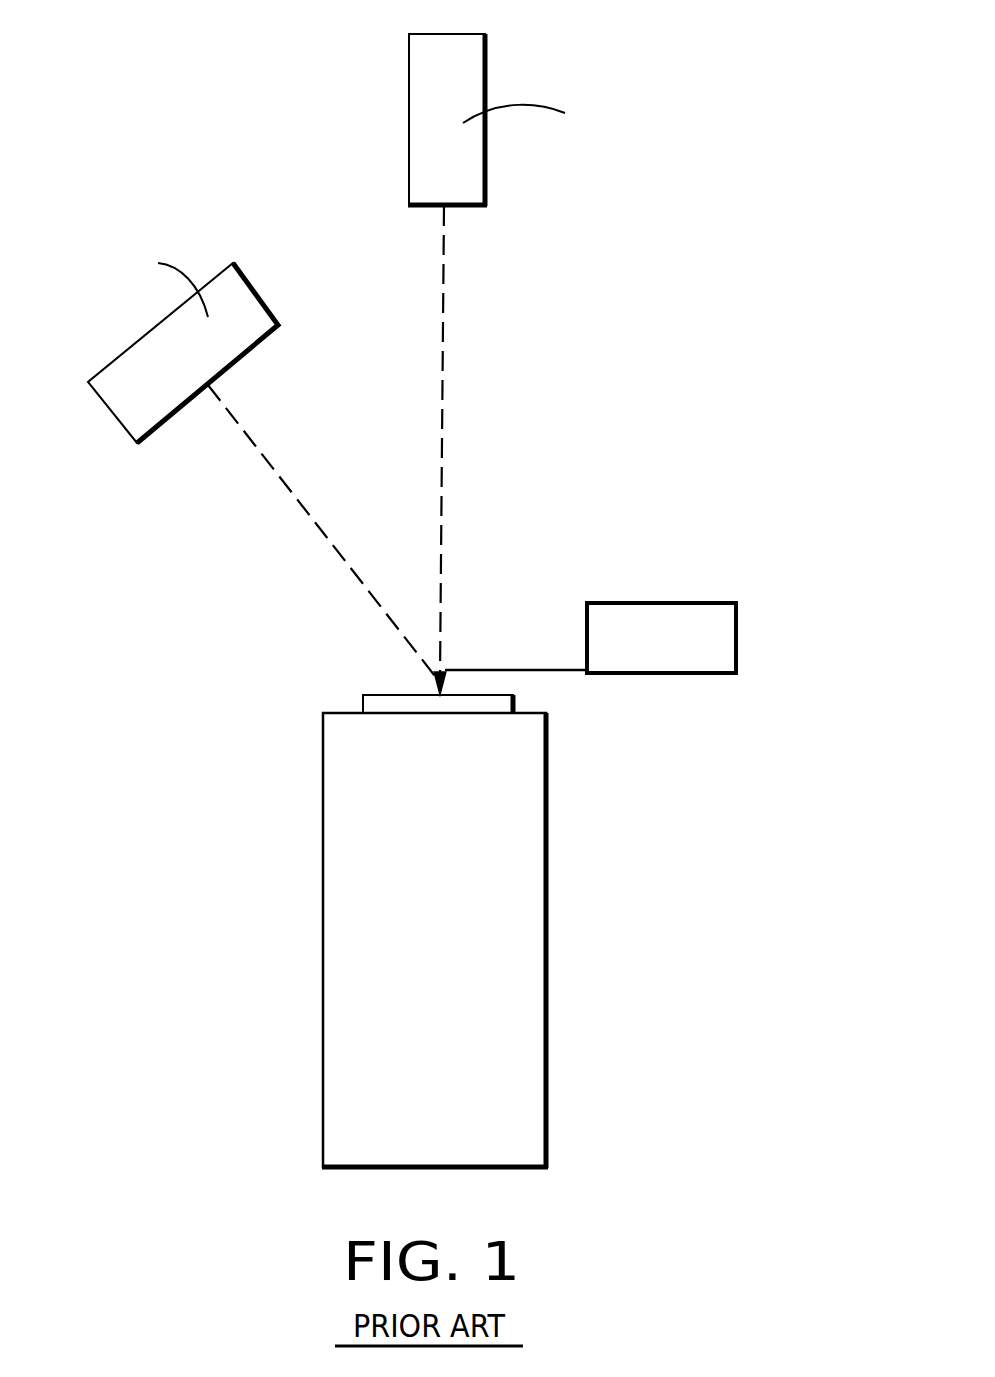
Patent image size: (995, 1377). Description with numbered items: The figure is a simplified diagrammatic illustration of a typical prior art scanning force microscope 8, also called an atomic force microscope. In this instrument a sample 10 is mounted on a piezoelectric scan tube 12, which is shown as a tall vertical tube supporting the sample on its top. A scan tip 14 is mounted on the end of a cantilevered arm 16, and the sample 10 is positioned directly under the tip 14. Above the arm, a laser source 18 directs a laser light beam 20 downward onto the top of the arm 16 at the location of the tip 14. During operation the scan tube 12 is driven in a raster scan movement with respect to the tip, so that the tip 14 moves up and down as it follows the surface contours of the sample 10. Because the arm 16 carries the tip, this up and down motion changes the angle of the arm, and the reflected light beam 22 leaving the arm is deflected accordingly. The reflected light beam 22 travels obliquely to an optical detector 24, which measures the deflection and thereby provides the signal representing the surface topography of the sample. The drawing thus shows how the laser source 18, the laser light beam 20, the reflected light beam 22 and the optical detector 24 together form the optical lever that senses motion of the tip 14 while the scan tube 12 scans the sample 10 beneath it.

The scanning force microscope 8 is at (528, 502).
The sample 10 is at (367, 695).
The piezoelectric scan tube 12 is at (548, 983).
The scan tip 14 is at (437, 683).
The cantilevered arm 16 is at (473, 668).
The laser source 18 is at (485, 165).
The laser light beam 20 is at (442, 378).
The reflected light beam 22 is at (260, 450).
The optical detector 24 is at (105, 408).